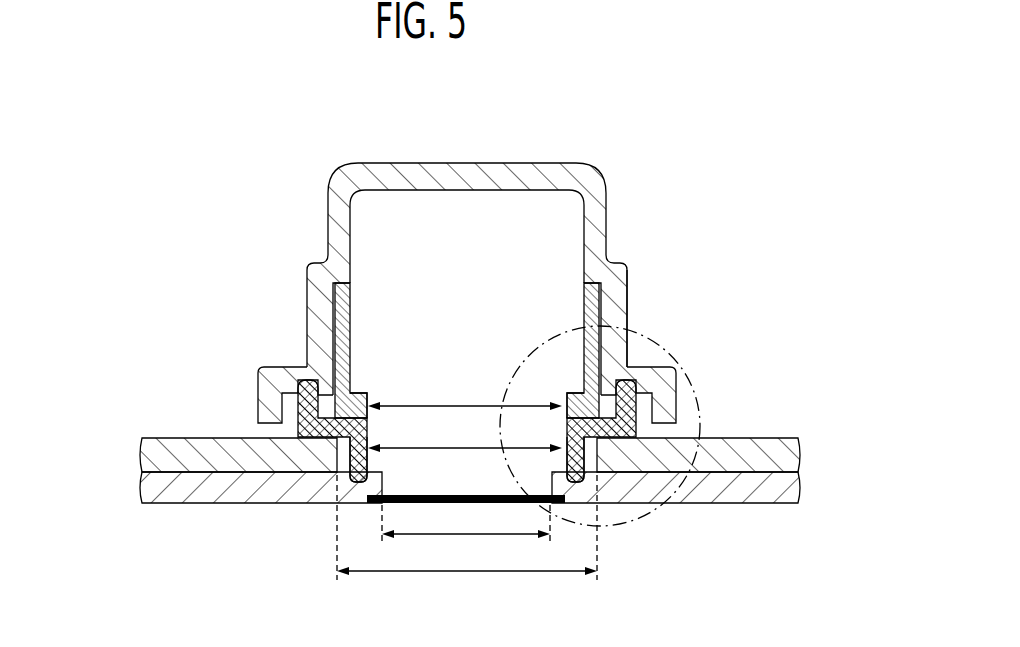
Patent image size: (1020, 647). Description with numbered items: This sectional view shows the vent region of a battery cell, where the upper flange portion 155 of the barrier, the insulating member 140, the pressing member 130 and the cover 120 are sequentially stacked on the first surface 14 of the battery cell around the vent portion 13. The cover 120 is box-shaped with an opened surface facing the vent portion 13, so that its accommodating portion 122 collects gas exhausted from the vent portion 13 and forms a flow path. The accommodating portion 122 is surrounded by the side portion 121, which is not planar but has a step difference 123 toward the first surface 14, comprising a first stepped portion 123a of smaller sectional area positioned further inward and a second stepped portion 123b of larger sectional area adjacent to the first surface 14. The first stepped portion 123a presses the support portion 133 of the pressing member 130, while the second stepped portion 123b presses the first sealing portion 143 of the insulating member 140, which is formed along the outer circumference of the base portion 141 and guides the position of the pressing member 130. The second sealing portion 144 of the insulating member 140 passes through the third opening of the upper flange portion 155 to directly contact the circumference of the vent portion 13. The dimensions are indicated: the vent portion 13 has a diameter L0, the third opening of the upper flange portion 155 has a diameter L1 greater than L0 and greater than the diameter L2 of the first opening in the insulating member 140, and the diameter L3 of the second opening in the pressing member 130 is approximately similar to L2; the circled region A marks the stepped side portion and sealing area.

The cover 120 is at (456, 148).
The side portion 121 is at (614, 181).
The accommodating portion 122 is at (506, 247).
The step difference 123 is at (775, 268).
The first stepped portion 123a is at (585, 300).
The second stepped portion 123b is at (622, 378).
The pressing member 130 is at (360, 328).
The support portion 133 is at (327, 329).
The insulating member 140 is at (284, 434).
The base portion 141 is at (380, 406).
The first sealing portion 143 is at (258, 385).
The second sealing portion 144 is at (355, 454).
The upper flange portion 155 is at (158, 459).
The first surface 14 is at (158, 486).
The vent portion 13 is at (440, 504).
The detail region A is at (700, 407).
The diameter of the vent portion L0 is at (466, 535).
The diameter of the third opening L1 is at (467, 538).
The diameter of the first opening L2 is at (465, 433).
The diameter of the second opening L3 is at (465, 391).